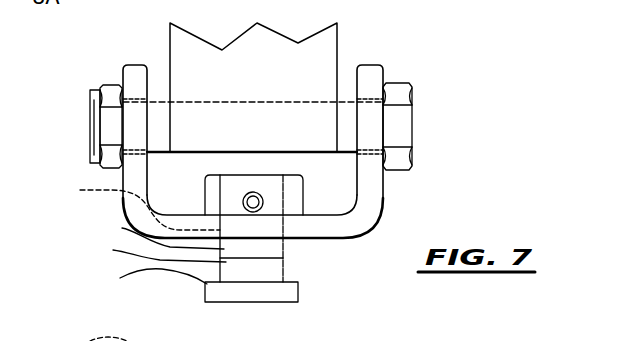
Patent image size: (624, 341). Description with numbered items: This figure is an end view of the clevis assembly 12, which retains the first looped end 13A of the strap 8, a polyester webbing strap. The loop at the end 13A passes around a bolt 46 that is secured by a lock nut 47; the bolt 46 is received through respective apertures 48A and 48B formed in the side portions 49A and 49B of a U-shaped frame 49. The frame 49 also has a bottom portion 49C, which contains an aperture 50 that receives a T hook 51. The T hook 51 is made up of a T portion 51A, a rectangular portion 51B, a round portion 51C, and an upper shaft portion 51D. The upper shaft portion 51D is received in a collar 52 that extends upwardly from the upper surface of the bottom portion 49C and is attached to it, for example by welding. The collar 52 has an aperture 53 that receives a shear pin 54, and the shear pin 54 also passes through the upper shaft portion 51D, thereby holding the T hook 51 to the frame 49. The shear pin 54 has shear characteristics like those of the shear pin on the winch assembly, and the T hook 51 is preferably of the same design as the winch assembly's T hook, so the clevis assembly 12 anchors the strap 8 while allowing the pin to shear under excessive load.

The strap 8 is at (303, 135).
The clevis assembly 12 is at (431, 61).
The first looped end 13A is at (312, 51).
The bolt 46 is at (421, 121).
The lock nut 47 is at (110, 96).
The aperture 48A is at (133, 177).
The aperture 48B is at (368, 100).
The U-shaped frame 49 is at (176, 213).
The side portion 49A is at (133, 168).
The side portion 49B is at (370, 175).
The bottom portion 49C is at (325, 228).
The aperture 50 is at (290, 225).
The T hook 51 is at (250, 308).
The T portion 51A is at (141, 281).
The rectangular portion 51B is at (148, 251).
The round portion 51C is at (151, 231).
The upper shaft portion 51D is at (127, 205).
The collar 52 is at (293, 188).
The aperture 53 is at (258, 210).
The shear pin 54 is at (243, 192).